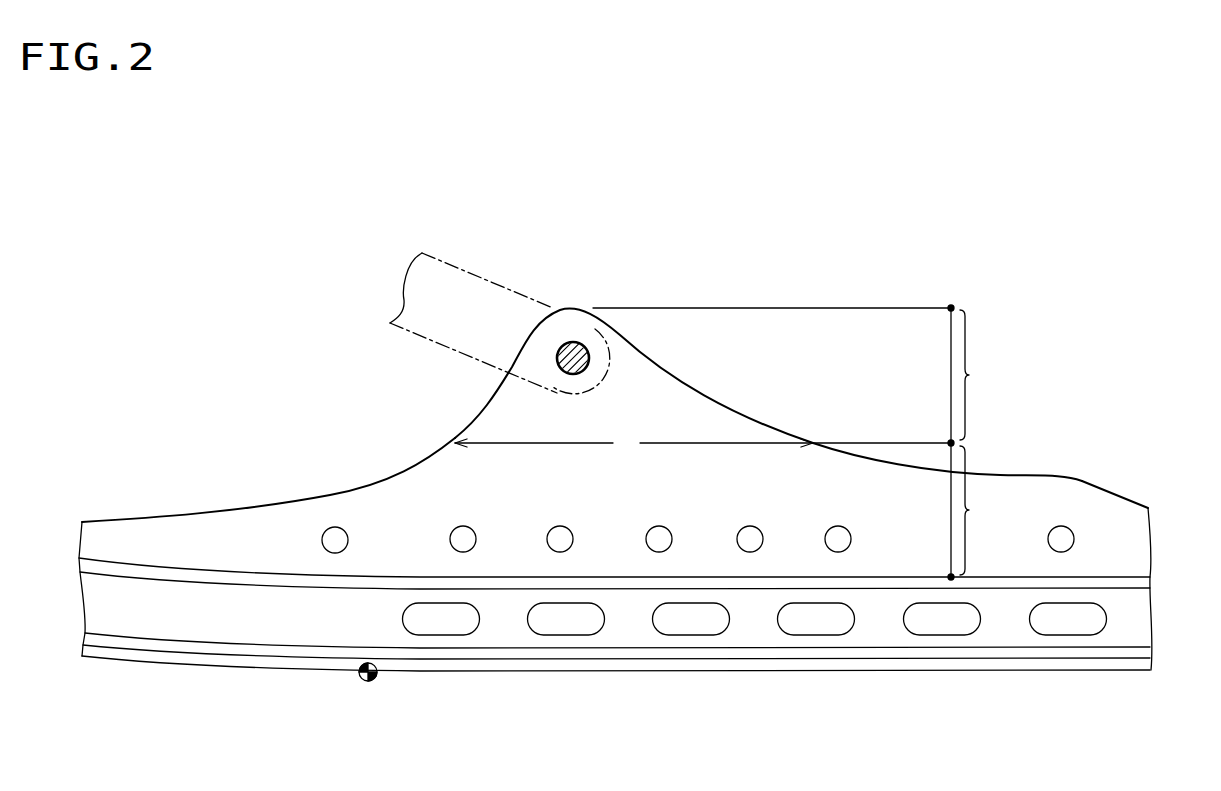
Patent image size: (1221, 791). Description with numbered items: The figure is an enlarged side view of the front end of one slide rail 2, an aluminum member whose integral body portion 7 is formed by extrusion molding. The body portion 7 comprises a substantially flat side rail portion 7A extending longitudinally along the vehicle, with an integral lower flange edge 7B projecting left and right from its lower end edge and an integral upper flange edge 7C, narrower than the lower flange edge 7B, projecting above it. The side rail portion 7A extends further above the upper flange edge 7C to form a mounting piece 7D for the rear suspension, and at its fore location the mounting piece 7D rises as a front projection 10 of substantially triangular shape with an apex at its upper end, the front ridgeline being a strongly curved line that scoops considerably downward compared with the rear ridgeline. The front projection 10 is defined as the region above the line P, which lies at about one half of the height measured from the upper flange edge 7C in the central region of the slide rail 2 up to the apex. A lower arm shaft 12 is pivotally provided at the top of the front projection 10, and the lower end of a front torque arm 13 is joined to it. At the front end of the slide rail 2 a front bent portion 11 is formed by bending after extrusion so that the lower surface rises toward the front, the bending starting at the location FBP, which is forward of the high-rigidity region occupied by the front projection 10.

The slide rail 2 is at (1128, 487).
The body portion 7 is at (1148, 622).
The side rail portion 7A is at (215, 628).
The lower flange edge 7B is at (638, 653).
The upper flange edge 7C is at (753, 582).
The mounting piece 7D is at (1140, 550).
The front projection 10 is at (662, 393).
The front bent portion 11 is at (118, 643).
The lower arm shaft 12 is at (578, 353).
The front torque arm 13 is at (440, 273).
The starting point of bending FBP is at (365, 682).
The line P is at (703, 445).